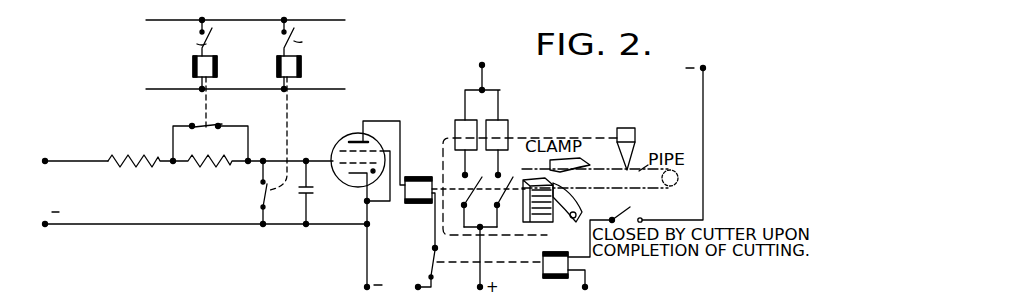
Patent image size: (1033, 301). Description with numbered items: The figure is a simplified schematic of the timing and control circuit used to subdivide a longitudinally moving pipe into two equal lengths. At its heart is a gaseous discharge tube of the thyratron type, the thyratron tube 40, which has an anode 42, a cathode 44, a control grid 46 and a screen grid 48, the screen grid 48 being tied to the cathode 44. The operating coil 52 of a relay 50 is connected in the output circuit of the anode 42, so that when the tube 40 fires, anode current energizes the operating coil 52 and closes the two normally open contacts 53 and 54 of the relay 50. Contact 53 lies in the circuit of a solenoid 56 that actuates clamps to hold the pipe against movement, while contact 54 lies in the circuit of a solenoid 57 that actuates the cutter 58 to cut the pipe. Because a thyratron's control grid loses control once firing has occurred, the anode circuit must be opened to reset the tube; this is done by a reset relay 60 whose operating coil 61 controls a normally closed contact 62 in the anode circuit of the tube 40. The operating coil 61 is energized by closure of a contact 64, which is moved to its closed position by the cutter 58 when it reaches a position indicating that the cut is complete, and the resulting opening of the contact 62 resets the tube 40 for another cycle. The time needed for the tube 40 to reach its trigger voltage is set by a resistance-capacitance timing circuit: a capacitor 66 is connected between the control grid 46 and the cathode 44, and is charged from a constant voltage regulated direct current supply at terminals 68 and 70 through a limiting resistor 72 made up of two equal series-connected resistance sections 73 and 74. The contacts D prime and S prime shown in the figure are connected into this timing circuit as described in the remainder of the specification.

The thyratron tube 40 is at (351, 187).
The anode 42 is at (362, 122).
The cathode 44 is at (366, 180).
The control grid 46 is at (333, 162).
The screen grid 48 is at (340, 150).
The relay 50 is at (426, 148).
The relay operating coil 52 is at (465, 200).
The contact 53 is at (477, 189).
The contact 54 is at (510, 189).
The solenoid 56 is at (458, 120).
The solenoid 57 is at (506, 120).
The cutter 58 is at (632, 158).
The reset relay 60 is at (569, 260).
The reset relay operating coil 61 is at (562, 248).
The normally closed contact 62 is at (436, 262).
The contact 64 is at (634, 217).
The capacitor 66 is at (313, 192).
The supply terminal 68 is at (45, 159).
The supply terminal 70 is at (196, 211).
The limiting resistor 72 is at (170, 167).
The resistance section 73 is at (135, 154).
The resistance section 74 is at (215, 158).